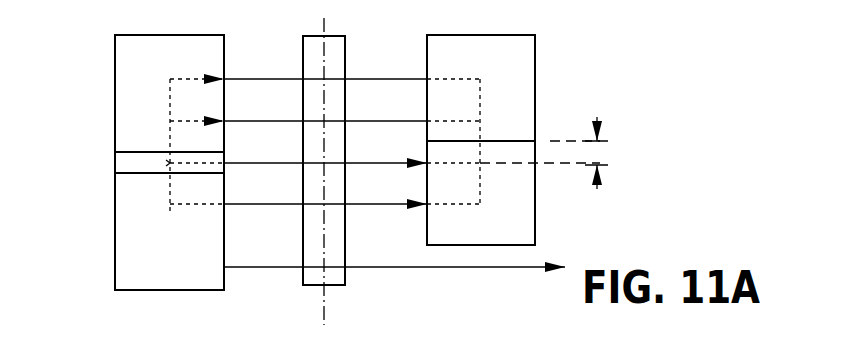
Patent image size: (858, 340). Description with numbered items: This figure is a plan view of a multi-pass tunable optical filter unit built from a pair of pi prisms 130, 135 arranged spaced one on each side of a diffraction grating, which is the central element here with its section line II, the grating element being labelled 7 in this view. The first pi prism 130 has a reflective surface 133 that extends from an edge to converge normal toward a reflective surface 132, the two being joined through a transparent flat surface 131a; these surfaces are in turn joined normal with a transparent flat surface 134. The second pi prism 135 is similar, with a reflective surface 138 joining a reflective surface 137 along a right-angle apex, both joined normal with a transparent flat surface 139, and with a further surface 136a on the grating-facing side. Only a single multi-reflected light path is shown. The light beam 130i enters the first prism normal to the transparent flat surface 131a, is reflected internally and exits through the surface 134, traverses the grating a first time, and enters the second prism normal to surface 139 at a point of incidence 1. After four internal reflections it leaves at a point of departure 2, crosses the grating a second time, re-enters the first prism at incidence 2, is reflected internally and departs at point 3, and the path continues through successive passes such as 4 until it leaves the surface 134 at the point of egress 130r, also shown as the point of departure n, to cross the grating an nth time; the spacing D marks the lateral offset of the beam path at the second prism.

The pi prism 130 is at (197, 36).
The light beam 130i is at (165, 163).
The point of egress 130r is at (226, 270).
The transparent flat surface 131a is at (125, 148).
The reflective surface 132 is at (158, 122).
The reflective surface 133 is at (158, 190).
The transparent flat surface 134 is at (225, 224).
The pi prism 135 is at (478, 35).
The conductor layer in block 135 136a is at (523, 141).
The reflective surface 137 is at (490, 110).
The reflective surface 138 is at (490, 180).
The transparent flat surface 139 is at (428, 212).
The bar / rail 7 is at (303, 247).
The section line II is at (328, 292).
The point of incidence 1 is at (325, 149).
The point of departure 2 is at (325, 107).
The point of departure 3 is at (325, 190).
The signal path 4 is at (325, 64).
The point of departure n is at (394, 257).
The offset distance D is at (605, 148).